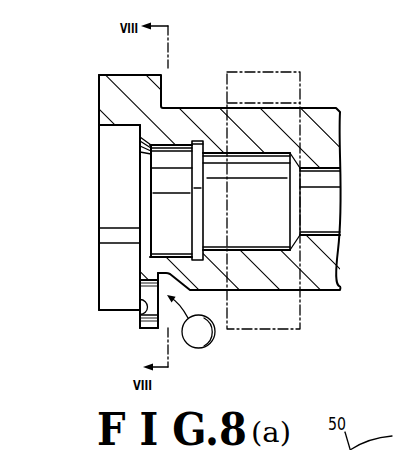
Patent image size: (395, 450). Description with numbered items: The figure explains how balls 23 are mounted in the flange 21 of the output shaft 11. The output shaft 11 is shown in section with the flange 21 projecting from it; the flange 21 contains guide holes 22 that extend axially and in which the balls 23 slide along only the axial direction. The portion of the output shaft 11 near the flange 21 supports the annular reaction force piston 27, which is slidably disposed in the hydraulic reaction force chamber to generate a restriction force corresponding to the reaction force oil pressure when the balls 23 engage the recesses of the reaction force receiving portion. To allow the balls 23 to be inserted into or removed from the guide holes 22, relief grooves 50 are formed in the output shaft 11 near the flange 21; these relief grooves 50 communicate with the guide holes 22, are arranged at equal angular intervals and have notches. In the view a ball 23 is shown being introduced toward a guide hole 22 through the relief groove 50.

The output shaft 11 is at (327, 120).
The flange 21 is at (152, 328).
The guide hole 22 is at (141, 305).
The ball 23 is at (207, 348).
The reaction force piston 27 is at (272, 88).
The relief groove 50 is at (158, 280).